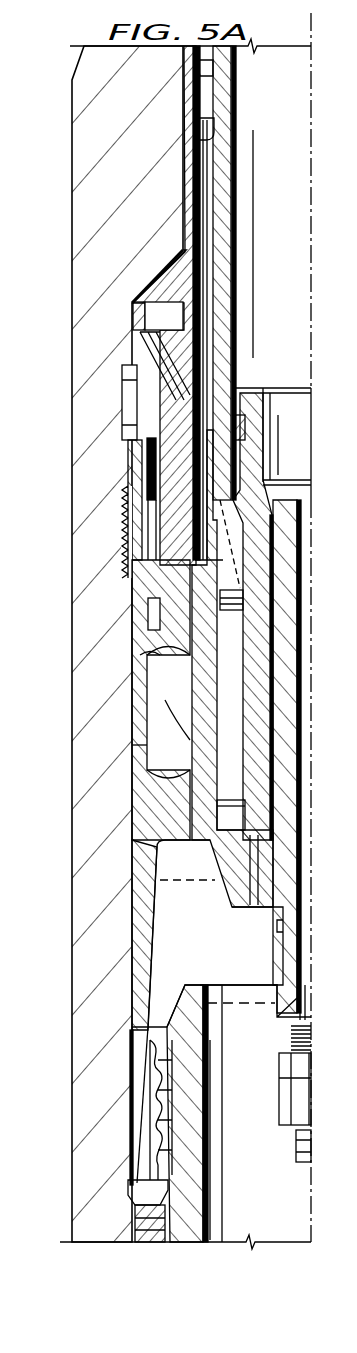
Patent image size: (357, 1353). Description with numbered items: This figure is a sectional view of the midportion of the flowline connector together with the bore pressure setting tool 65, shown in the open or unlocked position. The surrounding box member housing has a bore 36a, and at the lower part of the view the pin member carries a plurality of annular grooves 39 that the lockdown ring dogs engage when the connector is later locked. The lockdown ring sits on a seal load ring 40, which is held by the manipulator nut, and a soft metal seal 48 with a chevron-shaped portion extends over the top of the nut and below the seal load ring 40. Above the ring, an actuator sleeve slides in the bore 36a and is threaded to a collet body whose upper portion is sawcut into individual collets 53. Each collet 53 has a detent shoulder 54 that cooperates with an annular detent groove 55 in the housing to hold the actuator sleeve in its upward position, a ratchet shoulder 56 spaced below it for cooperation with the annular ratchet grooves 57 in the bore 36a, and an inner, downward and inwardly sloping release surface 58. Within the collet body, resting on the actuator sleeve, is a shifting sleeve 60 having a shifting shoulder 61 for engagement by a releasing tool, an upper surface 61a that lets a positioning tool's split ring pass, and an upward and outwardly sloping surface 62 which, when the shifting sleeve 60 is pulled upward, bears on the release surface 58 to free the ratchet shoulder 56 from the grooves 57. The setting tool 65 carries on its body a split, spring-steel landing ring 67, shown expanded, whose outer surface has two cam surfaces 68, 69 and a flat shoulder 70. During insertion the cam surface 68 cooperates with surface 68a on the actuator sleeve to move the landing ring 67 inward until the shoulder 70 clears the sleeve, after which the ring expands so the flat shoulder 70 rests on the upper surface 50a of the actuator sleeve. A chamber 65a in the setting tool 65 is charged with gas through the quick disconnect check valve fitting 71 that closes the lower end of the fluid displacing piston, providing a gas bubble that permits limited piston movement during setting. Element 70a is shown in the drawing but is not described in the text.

The bore of housing 36a is at (130, 945).
The annular grooves 39 is at (176, 1124).
The seal load ring 40 is at (128, 1197).
The metal seal 48 is at (165, 1228).
The upper surface of actuator sleeve 50a is at (140, 655).
The collets 53 is at (164, 316).
The detent shoulder 54 is at (133, 312).
The annular detent groove 55 is at (137, 345).
The ratchet shoulder 56 is at (122, 400).
The annular ratchet grooves 57 is at (122, 535).
The release surface 58 is at (140, 445).
The shifting sleeve 60 is at (185, 218).
The shifting shoulder 61 is at (206, 134).
The surface on shifting sleeve 61a is at (213, 72).
The upward and outwardly sloping surface 62 is at (158, 478).
The bore pressure setting tool 65 is at (222, 192).
The chamber 65a is at (292, 228).
The landing ring 67 is at (225, 787).
The cam surface 68 is at (165, 588).
The surface on actuator sleeve 68a is at (140, 745).
The cam surface 69 is at (200, 730).
The flat shoulder 70 is at (208, 668).
The tube lower end 70a is at (277, 927).
The check valve fitting 71 is at (296, 1140).